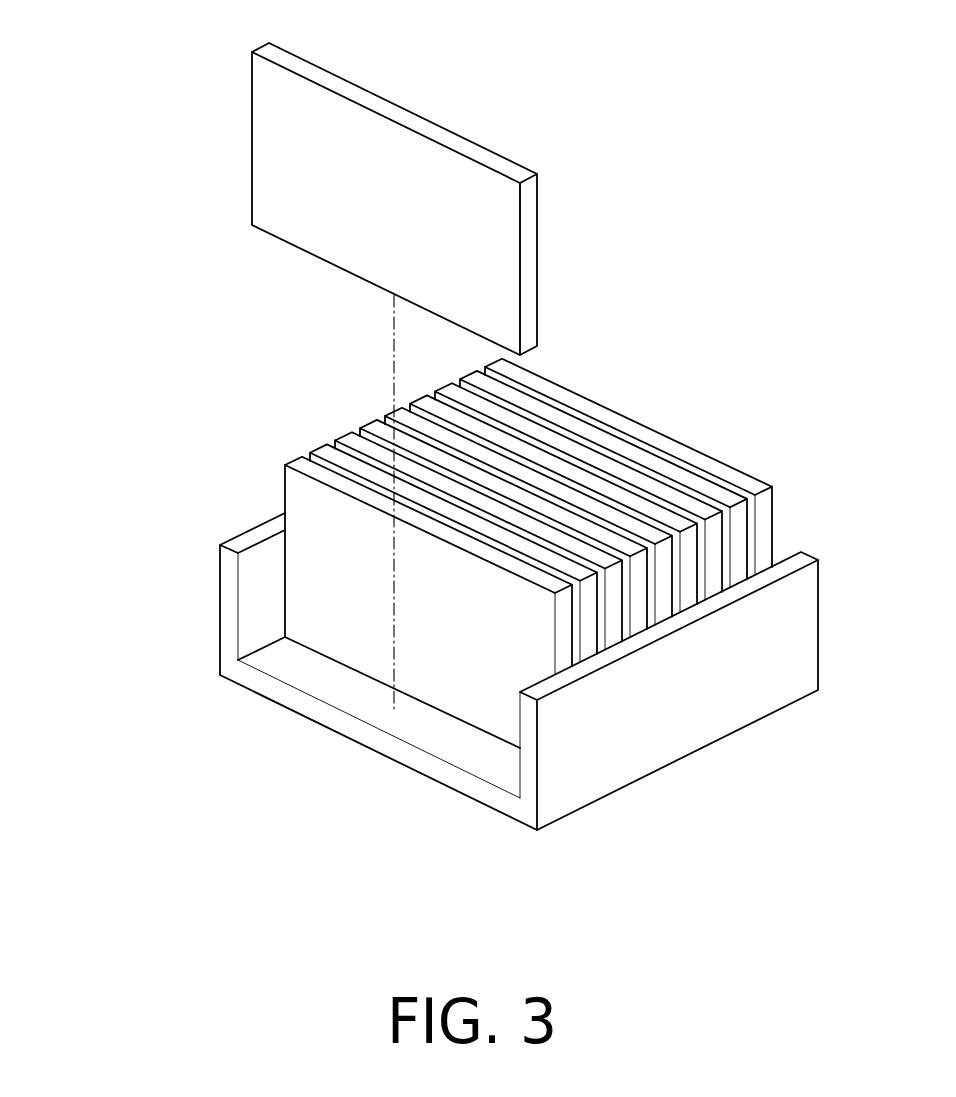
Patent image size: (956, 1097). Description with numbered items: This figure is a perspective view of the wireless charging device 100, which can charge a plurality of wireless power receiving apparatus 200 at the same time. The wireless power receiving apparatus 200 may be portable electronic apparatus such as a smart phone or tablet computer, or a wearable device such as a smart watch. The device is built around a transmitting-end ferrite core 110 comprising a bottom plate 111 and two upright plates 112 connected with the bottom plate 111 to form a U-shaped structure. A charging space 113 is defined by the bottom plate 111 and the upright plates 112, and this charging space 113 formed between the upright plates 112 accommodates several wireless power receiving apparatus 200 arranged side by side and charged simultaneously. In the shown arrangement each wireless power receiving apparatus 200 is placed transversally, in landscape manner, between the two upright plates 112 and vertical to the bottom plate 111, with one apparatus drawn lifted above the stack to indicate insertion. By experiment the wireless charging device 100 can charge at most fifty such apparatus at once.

The wireless charging device 100 is at (426, 479).
The transmitting-end ferrite core 110 is at (426, 687).
The bottom plate 111 is at (318, 685).
The upright plates 112 is at (225, 608).
The charging space 113 is at (353, 598).
The wireless power receiving apparatus 200 is at (400, 117).